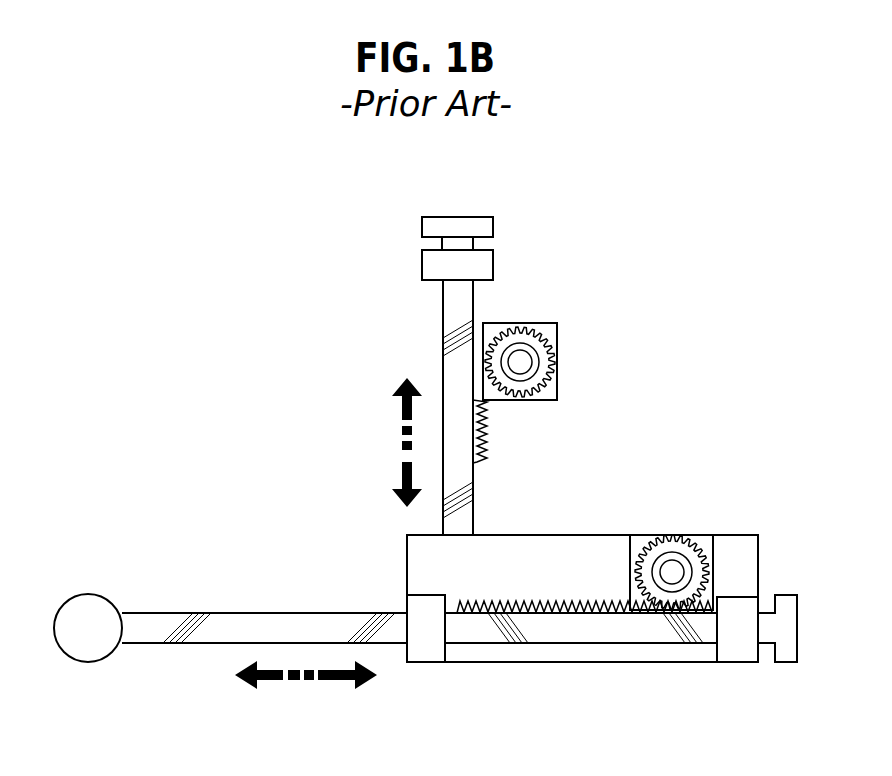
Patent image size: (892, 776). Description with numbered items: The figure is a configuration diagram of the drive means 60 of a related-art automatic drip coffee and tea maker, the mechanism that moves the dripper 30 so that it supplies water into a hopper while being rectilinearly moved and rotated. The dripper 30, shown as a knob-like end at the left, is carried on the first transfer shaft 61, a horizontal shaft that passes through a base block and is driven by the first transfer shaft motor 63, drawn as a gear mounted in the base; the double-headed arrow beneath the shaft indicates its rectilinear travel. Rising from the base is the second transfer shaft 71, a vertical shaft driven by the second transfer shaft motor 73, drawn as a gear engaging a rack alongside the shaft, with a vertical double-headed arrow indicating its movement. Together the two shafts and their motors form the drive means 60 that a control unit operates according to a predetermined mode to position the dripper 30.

The drive means 60 is at (195, 328).
The dripper 30 is at (88, 616).
The first transfer shaft 61 is at (187, 644).
The second transfer shaft 71 is at (452, 380).
The second transfer shaft motor 73 is at (560, 327).
The first transfer shaft motor 63 is at (707, 543).